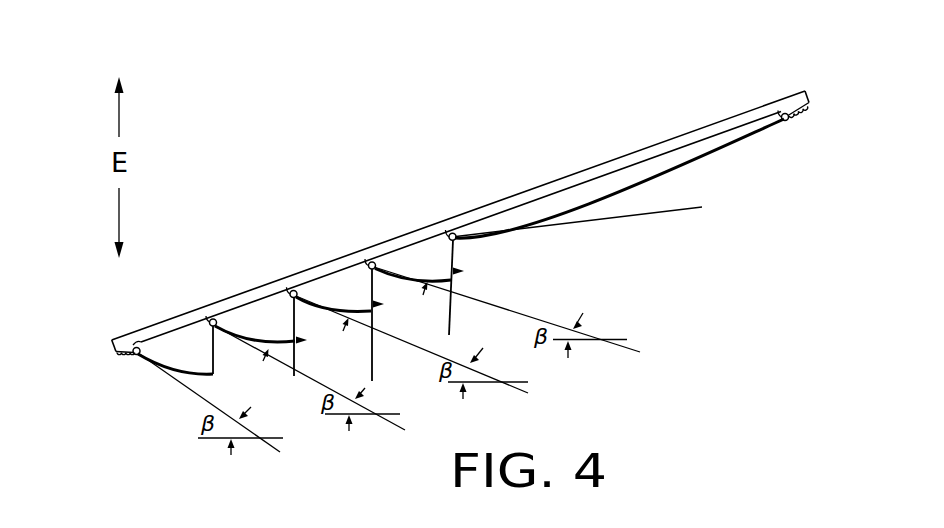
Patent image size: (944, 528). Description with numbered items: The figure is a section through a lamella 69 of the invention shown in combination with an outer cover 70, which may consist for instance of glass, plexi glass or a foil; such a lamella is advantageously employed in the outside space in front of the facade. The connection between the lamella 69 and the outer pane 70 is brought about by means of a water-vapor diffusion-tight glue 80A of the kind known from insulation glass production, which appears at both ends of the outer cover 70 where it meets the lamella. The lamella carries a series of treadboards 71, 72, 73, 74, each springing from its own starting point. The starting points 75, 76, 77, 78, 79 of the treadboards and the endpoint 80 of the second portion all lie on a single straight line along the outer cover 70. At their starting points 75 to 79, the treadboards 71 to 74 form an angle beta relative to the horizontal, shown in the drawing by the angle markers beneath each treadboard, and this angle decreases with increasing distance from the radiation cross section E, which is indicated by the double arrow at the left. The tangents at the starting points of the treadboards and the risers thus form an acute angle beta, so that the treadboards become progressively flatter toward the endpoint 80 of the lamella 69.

The lamella 69 is at (716, 324).
The outer cover 70 is at (603, 162).
The treadboard 71 is at (180, 372).
The treadboard 72 is at (232, 338).
The treadboard 73 is at (320, 308).
The treadboard 74 is at (401, 278).
The starting point 75 is at (443, 234).
The starting point 76 is at (364, 263).
The starting point 77 is at (285, 294).
The starting point 78 is at (210, 316).
The starting point 79 is at (140, 340).
The endpoint 80 is at (778, 113).
The water-vapor diffusion-tight glue 80A is at (117, 356).